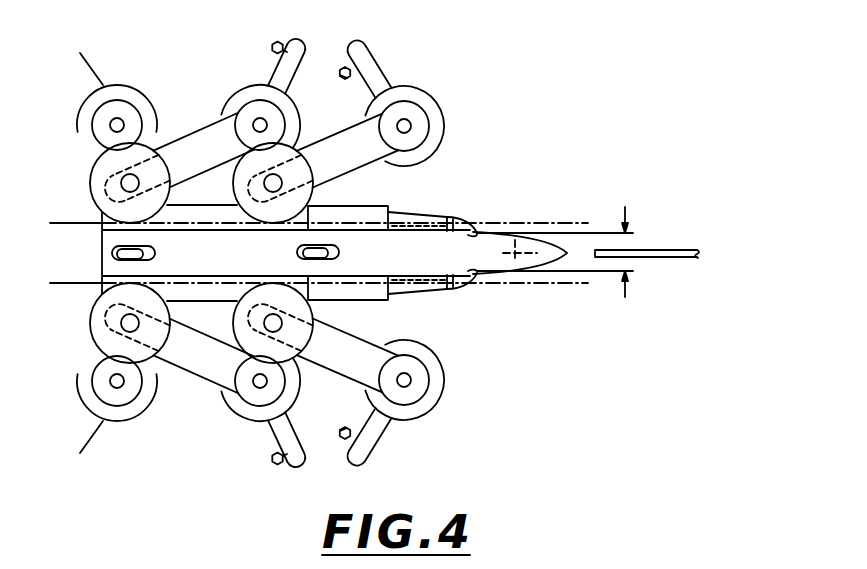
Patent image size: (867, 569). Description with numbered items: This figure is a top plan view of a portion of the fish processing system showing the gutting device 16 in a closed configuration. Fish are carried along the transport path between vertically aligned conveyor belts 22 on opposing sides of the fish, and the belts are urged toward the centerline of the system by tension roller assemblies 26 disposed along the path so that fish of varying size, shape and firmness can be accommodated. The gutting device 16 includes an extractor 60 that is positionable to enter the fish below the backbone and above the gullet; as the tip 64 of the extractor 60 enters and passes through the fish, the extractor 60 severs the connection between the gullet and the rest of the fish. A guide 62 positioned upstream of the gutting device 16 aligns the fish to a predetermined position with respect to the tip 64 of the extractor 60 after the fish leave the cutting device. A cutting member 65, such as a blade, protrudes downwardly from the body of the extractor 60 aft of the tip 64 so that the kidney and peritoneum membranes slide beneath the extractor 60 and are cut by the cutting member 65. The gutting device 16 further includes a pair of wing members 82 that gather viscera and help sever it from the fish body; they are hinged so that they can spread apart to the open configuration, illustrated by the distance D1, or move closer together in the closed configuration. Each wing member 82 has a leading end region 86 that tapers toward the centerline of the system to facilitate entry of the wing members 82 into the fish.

The gutting device 16 is at (452, 52).
The tension roller assemblies 26 is at (199, 131).
The conveyor belts 22 is at (578, 224).
The extractor 60 is at (403, 251).
The wing members 82 is at (402, 210).
The leading end region 86 is at (453, 216).
The tip 64 is at (567, 255).
The cutting member 65 is at (515, 258).
The distance D1 is at (568, 260).
The guide 62 is at (652, 253).